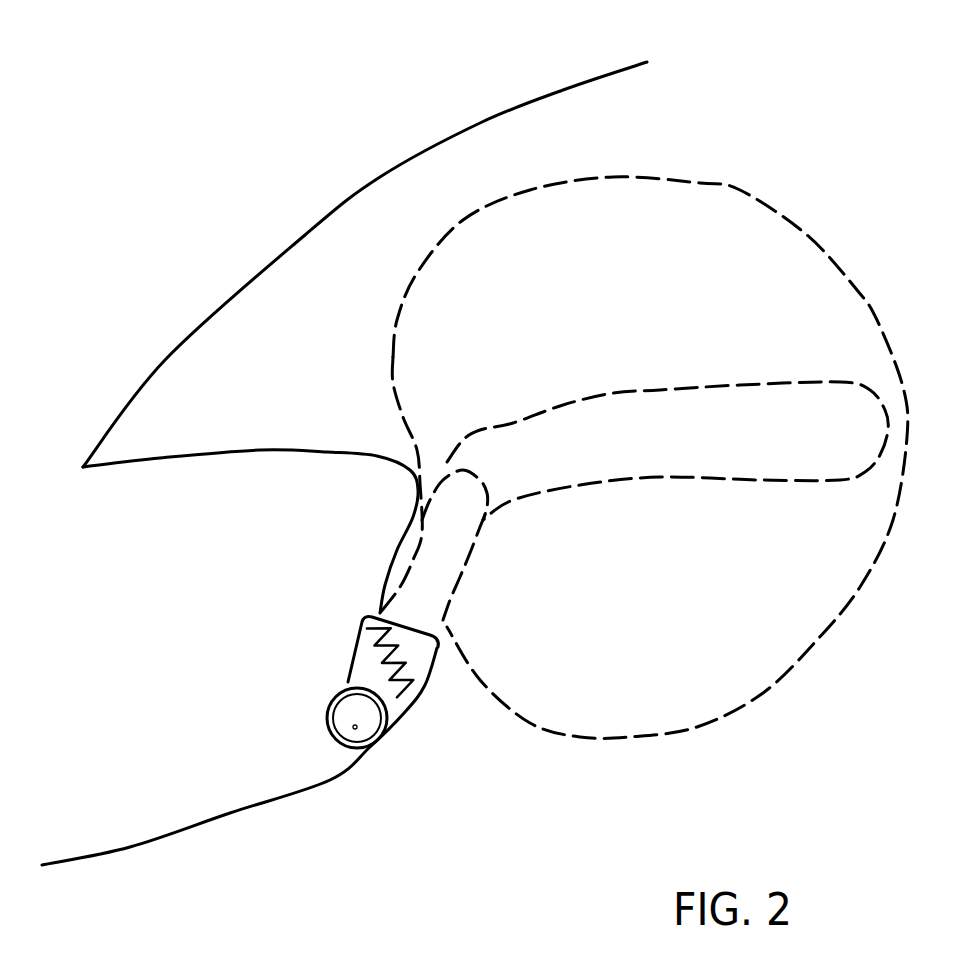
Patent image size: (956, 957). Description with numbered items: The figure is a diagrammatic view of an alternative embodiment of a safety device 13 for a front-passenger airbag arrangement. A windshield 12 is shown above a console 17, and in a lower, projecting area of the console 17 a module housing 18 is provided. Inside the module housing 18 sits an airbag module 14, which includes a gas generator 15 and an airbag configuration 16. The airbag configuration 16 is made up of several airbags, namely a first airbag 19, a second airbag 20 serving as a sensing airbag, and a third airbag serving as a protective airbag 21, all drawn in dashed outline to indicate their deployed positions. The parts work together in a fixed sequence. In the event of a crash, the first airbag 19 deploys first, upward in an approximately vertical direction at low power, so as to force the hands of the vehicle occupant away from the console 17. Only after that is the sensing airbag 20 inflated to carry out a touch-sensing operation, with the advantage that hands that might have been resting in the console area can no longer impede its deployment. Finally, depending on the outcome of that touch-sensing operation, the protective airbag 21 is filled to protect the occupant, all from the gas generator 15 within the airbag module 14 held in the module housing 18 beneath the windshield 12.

The windshield 12 is at (305, 235).
The safety device 13 is at (808, 147).
The airbag module 14 is at (381, 652).
The gas generator 15 is at (355, 727).
The airbag configuration 16 is at (405, 685).
The console 17 is at (292, 519).
The module housing 18 is at (327, 733).
The first airbag 19 is at (443, 570).
The second airbag (sensing airbag) 20 is at (769, 447).
The protective airbag 21 is at (639, 311).